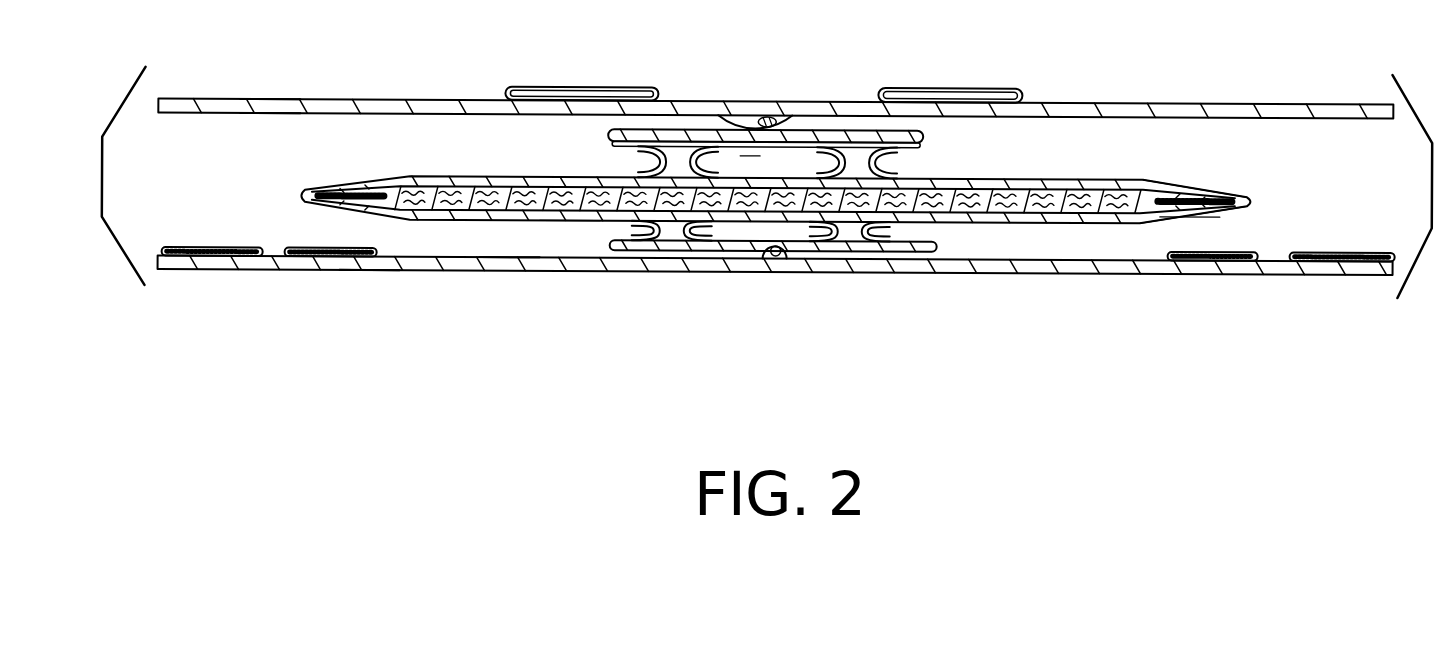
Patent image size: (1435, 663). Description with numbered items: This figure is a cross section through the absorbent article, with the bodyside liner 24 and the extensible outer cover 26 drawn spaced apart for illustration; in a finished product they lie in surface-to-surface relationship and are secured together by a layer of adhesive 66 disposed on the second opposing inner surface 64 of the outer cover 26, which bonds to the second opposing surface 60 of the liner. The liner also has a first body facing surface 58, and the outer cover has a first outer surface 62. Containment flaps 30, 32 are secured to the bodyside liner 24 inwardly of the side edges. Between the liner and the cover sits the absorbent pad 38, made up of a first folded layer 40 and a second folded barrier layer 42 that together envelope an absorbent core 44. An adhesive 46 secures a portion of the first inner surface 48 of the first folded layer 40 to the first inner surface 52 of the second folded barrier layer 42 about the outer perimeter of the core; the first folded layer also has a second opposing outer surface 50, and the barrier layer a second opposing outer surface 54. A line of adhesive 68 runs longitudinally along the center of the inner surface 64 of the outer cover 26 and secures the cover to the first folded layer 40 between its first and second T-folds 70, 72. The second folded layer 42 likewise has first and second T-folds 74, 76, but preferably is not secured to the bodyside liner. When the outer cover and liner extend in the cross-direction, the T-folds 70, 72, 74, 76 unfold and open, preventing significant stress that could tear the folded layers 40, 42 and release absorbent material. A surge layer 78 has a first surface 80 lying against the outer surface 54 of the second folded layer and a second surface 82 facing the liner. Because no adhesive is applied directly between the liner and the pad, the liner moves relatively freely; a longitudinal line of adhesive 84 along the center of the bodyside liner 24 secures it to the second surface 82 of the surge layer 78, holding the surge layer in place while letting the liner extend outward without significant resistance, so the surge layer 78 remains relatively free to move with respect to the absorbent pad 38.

The bodyside liner 24 is at (1192, 104).
The extensible outer cover 26 is at (1076, 281).
The containment flap 30 is at (979, 87).
The containment flap 32 is at (528, 87).
The absorbent pad 38 is at (1020, 164).
The first folded layer 40 is at (528, 226).
The second folded barrier layer 42 is at (773, 195).
The absorbent core 44 is at (1137, 187).
The adhesive 46 is at (343, 190).
The first inner surface 48 is at (1048, 212).
The second opposing outer surface 50 is at (1097, 224).
The first inner surface 52 is at (550, 188).
The second opposing outer surface 54 is at (475, 177).
The first body facing surface 58 is at (272, 99).
The second opposing surface 60 is at (258, 114).
The first outer surface 62 is at (372, 273).
The second opposing inner surface 64 is at (530, 256).
The adhesive 66 is at (303, 248).
The line of adhesive 68 is at (780, 262).
The first T-fold 70 is at (925, 236).
The second T-fold 72 is at (627, 230).
The first T-fold 74 is at (907, 164).
The second T-fold 76 is at (615, 147).
The surge layer 78 is at (857, 128).
The first surface 80 is at (745, 162).
The second surface 82 is at (813, 130).
The line of adhesive 84 is at (719, 114).